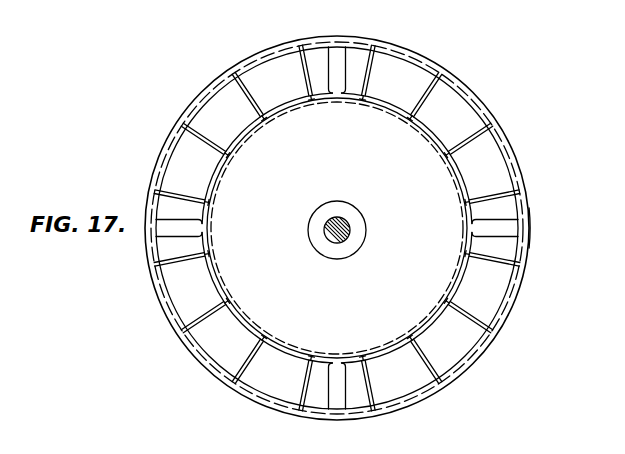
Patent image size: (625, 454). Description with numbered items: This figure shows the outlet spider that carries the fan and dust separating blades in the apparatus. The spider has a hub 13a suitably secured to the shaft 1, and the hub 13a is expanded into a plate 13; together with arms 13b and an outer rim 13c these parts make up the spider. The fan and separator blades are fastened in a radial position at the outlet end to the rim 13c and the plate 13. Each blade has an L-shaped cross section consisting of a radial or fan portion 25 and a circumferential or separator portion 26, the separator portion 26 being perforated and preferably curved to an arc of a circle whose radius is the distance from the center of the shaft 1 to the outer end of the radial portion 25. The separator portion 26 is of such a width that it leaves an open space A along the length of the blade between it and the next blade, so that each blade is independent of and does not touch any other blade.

The shaft 1 is at (323, 237).
The plate 13 is at (337, 228).
The hub 13a is at (366, 235).
The arms 13b is at (337, 228).
The rim 13c is at (530, 233).
The radial or fan portion 25 is at (470, 145).
The circumferential or separator portion 26 is at (475, 93).
The open space A is at (444, 70).